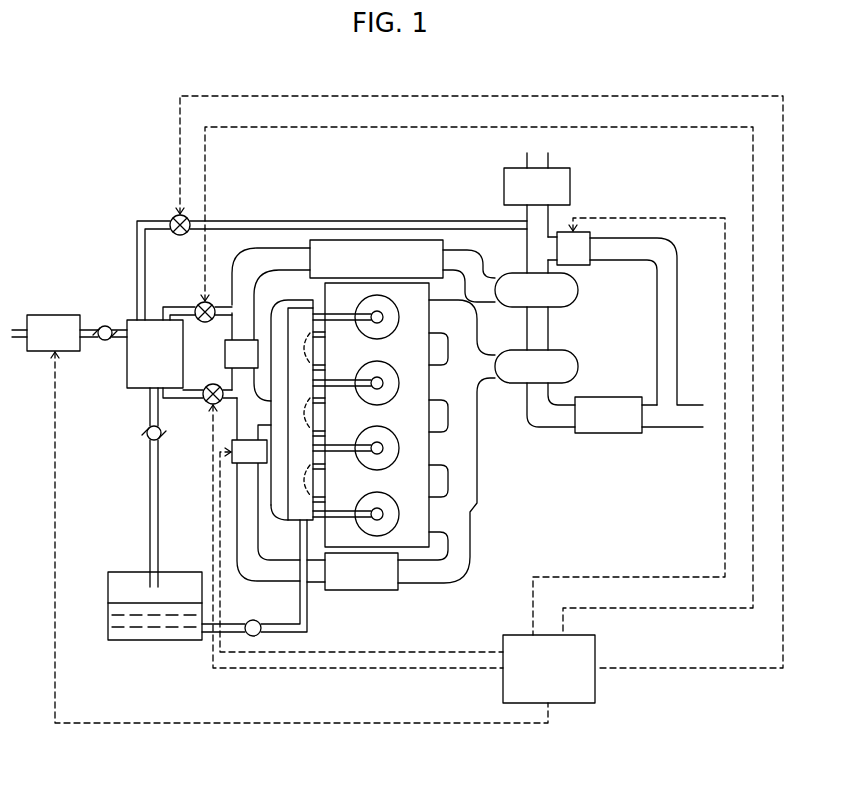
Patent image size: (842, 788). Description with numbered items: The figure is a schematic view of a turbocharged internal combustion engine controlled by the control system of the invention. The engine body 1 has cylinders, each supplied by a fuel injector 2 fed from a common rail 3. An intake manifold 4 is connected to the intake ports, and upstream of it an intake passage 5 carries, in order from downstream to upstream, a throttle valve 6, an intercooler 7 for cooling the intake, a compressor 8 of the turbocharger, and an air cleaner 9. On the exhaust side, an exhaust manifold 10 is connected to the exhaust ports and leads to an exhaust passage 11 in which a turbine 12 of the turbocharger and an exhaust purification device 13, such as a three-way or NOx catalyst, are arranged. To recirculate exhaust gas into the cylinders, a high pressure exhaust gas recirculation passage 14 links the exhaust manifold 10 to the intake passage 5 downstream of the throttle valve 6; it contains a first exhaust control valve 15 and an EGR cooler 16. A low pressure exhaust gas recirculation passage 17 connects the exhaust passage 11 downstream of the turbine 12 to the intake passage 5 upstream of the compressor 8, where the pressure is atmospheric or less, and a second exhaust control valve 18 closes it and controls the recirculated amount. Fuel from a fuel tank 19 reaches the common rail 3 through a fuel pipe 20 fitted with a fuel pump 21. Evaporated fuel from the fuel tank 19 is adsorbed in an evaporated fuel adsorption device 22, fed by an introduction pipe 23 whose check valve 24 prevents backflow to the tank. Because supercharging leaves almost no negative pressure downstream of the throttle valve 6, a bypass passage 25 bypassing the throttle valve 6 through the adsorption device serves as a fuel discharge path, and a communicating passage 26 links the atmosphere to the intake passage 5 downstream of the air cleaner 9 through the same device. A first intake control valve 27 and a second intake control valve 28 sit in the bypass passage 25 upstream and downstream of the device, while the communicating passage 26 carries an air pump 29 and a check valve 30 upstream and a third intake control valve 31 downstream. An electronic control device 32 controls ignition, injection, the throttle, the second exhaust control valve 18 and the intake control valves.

The engine body 1 is at (412, 413).
The fuel injector 2 is at (383, 384).
The common rail 3 is at (303, 322).
The intake manifold 4 is at (278, 513).
The intake passage 5 is at (254, 262).
The throttle valve 6 is at (238, 355).
The intercooler 7 is at (379, 256).
The compressor 8 is at (567, 292).
The air cleaner 9 is at (556, 180).
The exhaust manifold 10 is at (462, 472).
The exhaust passage 11 is at (653, 416).
The turbine 12 is at (568, 368).
The exhaust purification device 13 is at (613, 420).
The high pressure exhaust gas recirculation passage 14 is at (426, 572).
The first exhaust control valve 15 is at (249, 460).
The EGR cooler 16 is at (366, 577).
The low pressure exhaust gas recirculation passage 17 is at (668, 305).
The second exhaust control valve 18 is at (583, 250).
The fuel tank 19 is at (133, 635).
The fuel pipe 20 is at (302, 610).
The fuel pump 21 is at (253, 634).
The evaporated fuel adsorption device 22 is at (135, 356).
The introduction pipe 23 is at (153, 518).
The check valve 24 is at (152, 437).
The bypass passage 25 is at (178, 307).
The communicating passage 26 is at (138, 246).
The first intake control valve 27 is at (203, 302).
The second intake control valve 28 is at (212, 411).
The air pump 29 is at (54, 330).
The check valve 30 is at (104, 326).
The third intake control valve 31 is at (171, 217).
The electronic control device 32 is at (582, 688).